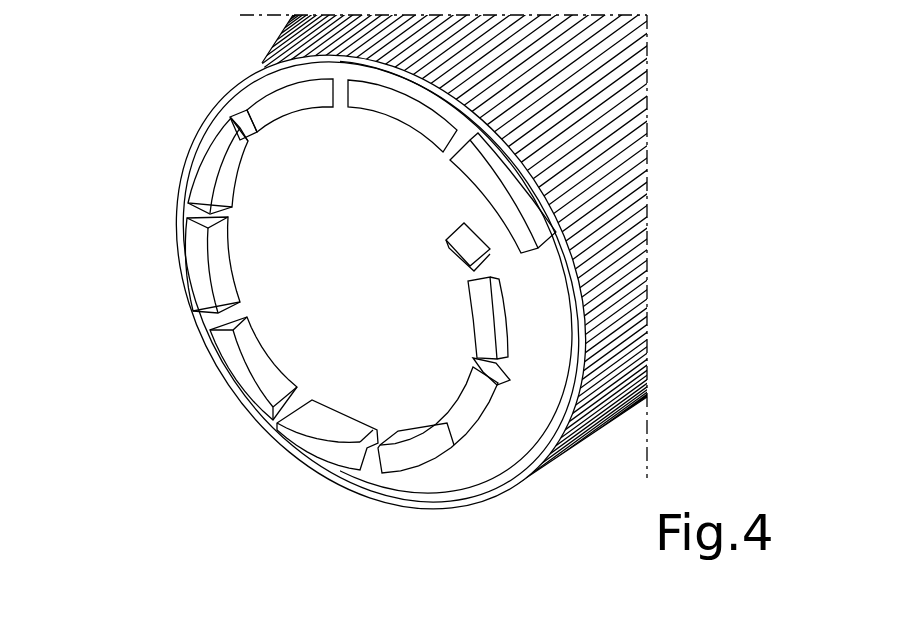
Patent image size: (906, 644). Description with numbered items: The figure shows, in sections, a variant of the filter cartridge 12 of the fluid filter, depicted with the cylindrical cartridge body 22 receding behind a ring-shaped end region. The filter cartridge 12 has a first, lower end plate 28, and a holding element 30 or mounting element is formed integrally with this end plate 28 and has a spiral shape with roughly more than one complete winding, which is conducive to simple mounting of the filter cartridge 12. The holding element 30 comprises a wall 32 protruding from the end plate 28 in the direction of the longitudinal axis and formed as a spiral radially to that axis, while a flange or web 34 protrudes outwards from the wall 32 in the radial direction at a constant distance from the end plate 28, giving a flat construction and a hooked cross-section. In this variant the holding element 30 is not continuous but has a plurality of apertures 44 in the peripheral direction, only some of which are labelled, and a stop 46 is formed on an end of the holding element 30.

The filter cartridge 12 is at (402, 322).
The cylindrical body 22 is at (464, 322).
The end plate 28 is at (483, 472).
The holding element 30 is at (514, 406).
The wall 32 is at (257, 360).
The web 34 is at (193, 277).
The apertures 44 is at (462, 135).
The stop 46 is at (606, 226).